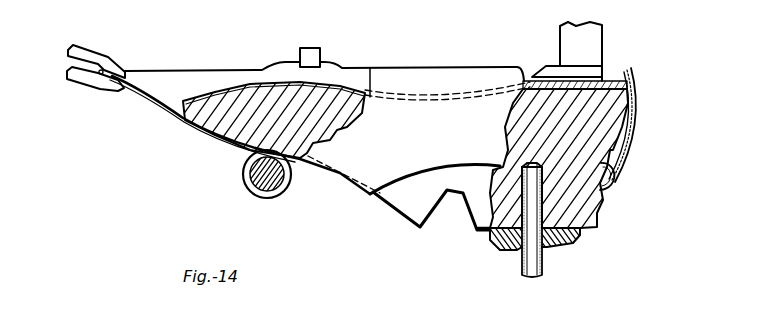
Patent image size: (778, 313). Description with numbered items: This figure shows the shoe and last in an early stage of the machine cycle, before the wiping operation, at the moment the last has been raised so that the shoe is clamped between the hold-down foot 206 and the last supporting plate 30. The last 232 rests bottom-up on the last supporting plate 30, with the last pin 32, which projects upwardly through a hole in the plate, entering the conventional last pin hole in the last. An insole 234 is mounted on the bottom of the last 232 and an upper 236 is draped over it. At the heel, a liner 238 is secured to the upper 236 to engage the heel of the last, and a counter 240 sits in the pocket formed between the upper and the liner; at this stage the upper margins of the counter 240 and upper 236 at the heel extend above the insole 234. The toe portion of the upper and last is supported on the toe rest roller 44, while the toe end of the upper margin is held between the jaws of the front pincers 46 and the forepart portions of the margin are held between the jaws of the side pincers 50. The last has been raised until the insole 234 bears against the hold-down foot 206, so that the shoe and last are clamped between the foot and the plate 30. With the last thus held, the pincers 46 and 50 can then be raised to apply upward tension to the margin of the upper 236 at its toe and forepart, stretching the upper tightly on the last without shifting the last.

The front pincers 46 is at (96, 58).
The upper 236 is at (165, 78).
The insole 234 is at (266, 86).
The side pincers 50 is at (318, 51).
The toe rest roller 44 is at (246, 180).
The last 232 is at (404, 200).
The last supporting plate 30 is at (563, 246).
The last pin 32 is at (530, 251).
The liner 238 is at (604, 187).
The hold-down foot 206 is at (592, 42).
The counter 240 is at (620, 72).